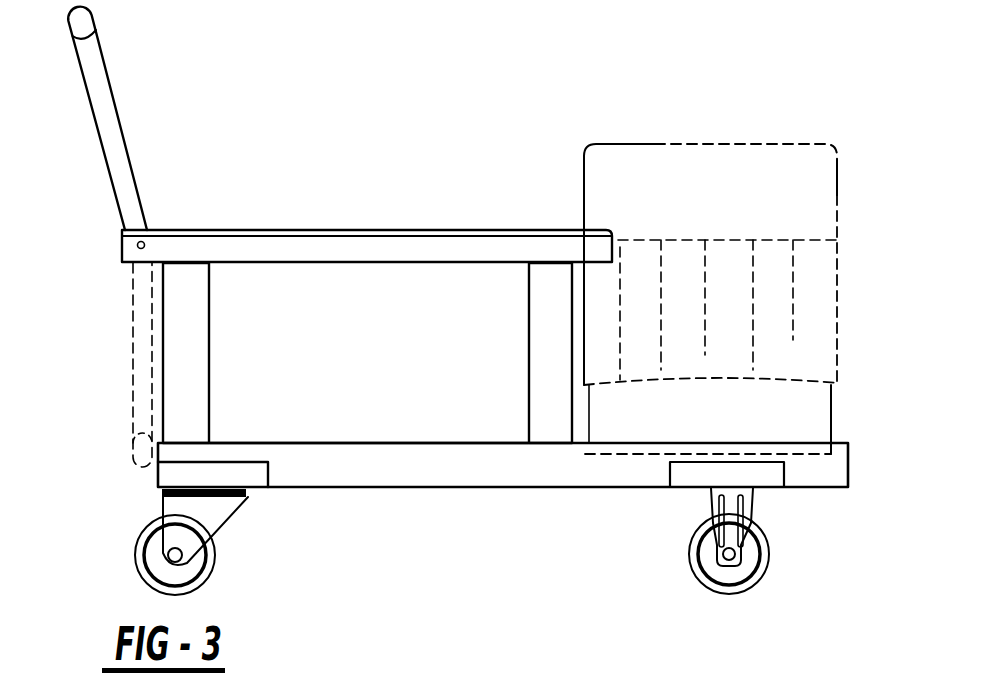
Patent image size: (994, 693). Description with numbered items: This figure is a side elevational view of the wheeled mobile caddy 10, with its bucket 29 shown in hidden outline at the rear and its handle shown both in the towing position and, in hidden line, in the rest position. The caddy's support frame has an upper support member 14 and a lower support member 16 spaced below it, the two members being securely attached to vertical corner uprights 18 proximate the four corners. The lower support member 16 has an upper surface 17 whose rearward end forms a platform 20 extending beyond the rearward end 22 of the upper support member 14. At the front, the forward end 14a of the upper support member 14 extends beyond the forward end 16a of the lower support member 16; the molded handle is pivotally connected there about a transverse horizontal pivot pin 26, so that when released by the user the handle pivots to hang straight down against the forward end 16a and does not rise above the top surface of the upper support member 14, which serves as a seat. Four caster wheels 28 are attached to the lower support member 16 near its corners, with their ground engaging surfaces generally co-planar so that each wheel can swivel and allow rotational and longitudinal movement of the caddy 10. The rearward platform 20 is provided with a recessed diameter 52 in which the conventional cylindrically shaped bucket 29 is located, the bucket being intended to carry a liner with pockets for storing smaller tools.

The wheeled mobile caddy 10 is at (545, 41).
The upper support member 14 is at (330, 230).
The forward end of the upper support member 14a is at (120, 248).
The transverse horizontal pivot pin 26 is at (145, 246).
The vertical corner uprights 18 is at (163, 353).
The lower support member 16 is at (318, 488).
The forward end of the lower support member 16a is at (160, 477).
The upper surface 17 is at (322, 440).
The platform 20 is at (778, 443).
The rearward end of the upper support member 22 is at (613, 233).
The bucket 29 is at (837, 195).
The recessed diameter 52 is at (832, 456).
The caster wheels 28 is at (147, 578).